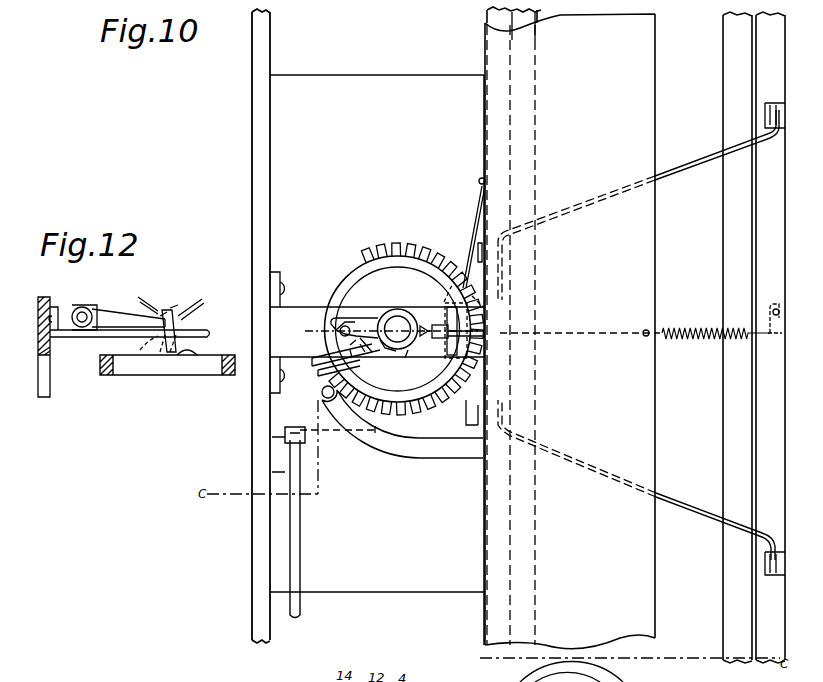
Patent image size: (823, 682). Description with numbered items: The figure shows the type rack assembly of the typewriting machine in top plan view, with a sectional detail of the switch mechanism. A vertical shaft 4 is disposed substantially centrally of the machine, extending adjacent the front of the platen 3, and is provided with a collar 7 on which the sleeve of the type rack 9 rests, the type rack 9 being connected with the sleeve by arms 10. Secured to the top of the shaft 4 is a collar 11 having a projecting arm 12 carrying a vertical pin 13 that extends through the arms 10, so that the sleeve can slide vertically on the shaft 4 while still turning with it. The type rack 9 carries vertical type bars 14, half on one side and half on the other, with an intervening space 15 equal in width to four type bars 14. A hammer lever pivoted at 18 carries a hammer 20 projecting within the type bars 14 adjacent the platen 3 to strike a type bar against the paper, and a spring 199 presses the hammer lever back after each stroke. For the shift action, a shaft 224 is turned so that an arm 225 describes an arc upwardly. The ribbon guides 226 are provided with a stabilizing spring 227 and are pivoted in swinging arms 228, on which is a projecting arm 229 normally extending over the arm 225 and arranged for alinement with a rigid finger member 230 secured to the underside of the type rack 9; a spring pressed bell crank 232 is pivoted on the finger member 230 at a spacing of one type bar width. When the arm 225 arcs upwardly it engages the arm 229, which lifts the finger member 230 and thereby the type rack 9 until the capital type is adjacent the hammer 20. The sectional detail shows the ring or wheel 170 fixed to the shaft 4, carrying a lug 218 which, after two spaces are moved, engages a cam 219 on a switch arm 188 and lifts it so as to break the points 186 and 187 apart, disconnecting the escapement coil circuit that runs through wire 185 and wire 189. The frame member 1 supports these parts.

In FIG. 10, the frame bar 1 is at (270, 633).
In FIG. 10, the platen 3 is at (641, 590).
In FIG. 10, the vertical shaft 4 is at (397, 318).
In FIG. 10, the collar 7 is at (407, 313).
In FIG. 10, the type rack 9 is at (352, 282).
In FIG. 10, the arms 10 is at (352, 318).
In FIG. 10, the collar 11 is at (405, 352).
In FIG. 10, the projecting arm 12 is at (371, 327).
In FIG. 10, the vertical pin 13 is at (340, 331).
In FIG. 10, the type bars 14 is at (413, 403).
In FIG. 10, the intervening space 15 is at (478, 352).
In FIG. 10, the pivot 18 is at (452, 264).
In FIG. 10, the hammer 20 is at (444, 342).
In FIG. 10, the spring 199 is at (470, 243).
In FIG. 10, the shaft 224 is at (305, 542).
In FIG. 10, the arm 225 is at (342, 440).
In FIG. 10, the ribbon guides 226 is at (480, 414).
In FIG. 10, the stabilizing spring 227 is at (677, 340).
In FIG. 10, the swinging arms 228 is at (592, 185).
In FIG. 10, the projecting arm 229 is at (437, 455).
In FIG. 10, the rigid finger member 230 is at (314, 360).
In FIG. 10, the spring pressed bell crank 232 is at (322, 374).
In FIG. 12, the ring 170 is at (207, 376).
In FIG. 12, the wire 185 is at (203, 298).
In FIG. 12, the point 186 is at (140, 352).
In FIG. 12, the point 187 is at (178, 308).
In FIG. 12, the switch arm 188 is at (123, 318).
In FIG. 12, the wire 189 is at (143, 298).
In FIG. 12, the lug 218 is at (195, 352).
In FIG. 12, the cam 219 is at (160, 362).